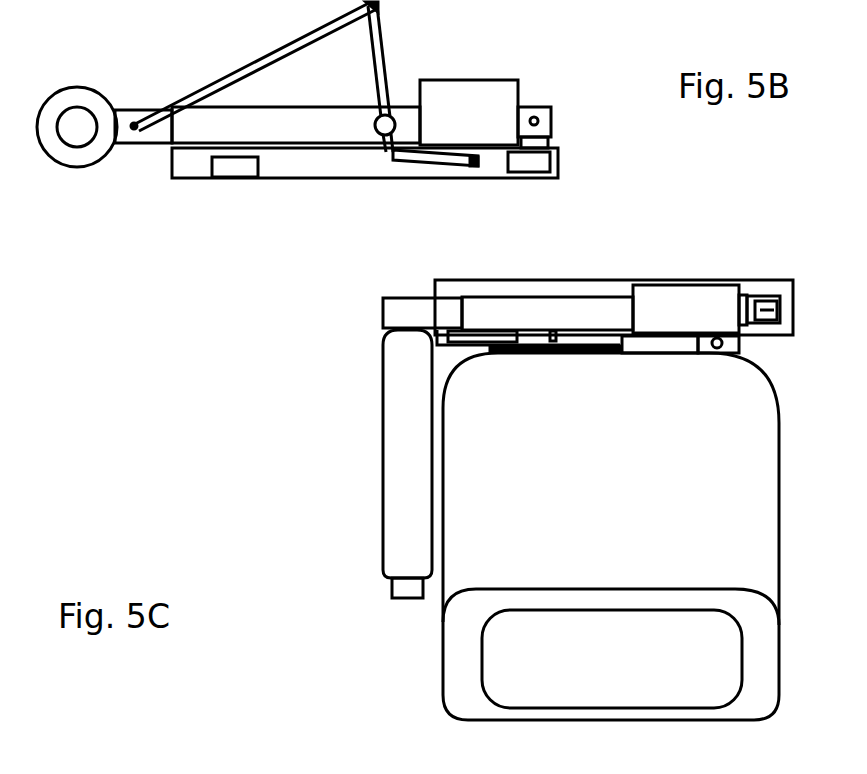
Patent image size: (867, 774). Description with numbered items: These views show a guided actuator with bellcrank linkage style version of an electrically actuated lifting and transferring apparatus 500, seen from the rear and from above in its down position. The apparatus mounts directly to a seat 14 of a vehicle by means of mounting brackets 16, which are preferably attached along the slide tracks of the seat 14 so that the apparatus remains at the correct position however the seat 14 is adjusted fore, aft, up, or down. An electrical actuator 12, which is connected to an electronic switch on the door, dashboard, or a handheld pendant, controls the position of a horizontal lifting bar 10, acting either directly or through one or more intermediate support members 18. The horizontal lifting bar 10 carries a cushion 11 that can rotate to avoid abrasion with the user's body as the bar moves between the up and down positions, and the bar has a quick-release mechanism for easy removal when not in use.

In FIG. 5C, the electrically actuated lifting and transferring apparatus 500 is at (190, 434).
In FIG. 5B, the horizontal lifting bar 10 is at (85, 130).
In FIG. 5C, the horizontal lifting bar 10 is at (408, 588).
In FIG. 5B, the cushion 11 is at (102, 90).
In FIG. 5C, the cushion 11 is at (400, 508).
In FIG. 5B, the electrical actuator 12 is at (455, 106).
In FIG. 5C, the electrical actuator 12 is at (722, 307).
In FIG. 5C, the seat 14 is at (487, 572).
In FIG. 5B, the mounting brackets 16 is at (245, 168).
In FIG. 5C, the mounting brackets 16 is at (490, 337).
In FIG. 5B, the intermediate support member 18 is at (155, 135).
In FIG. 5C, the intermediate support member 18 is at (408, 317).